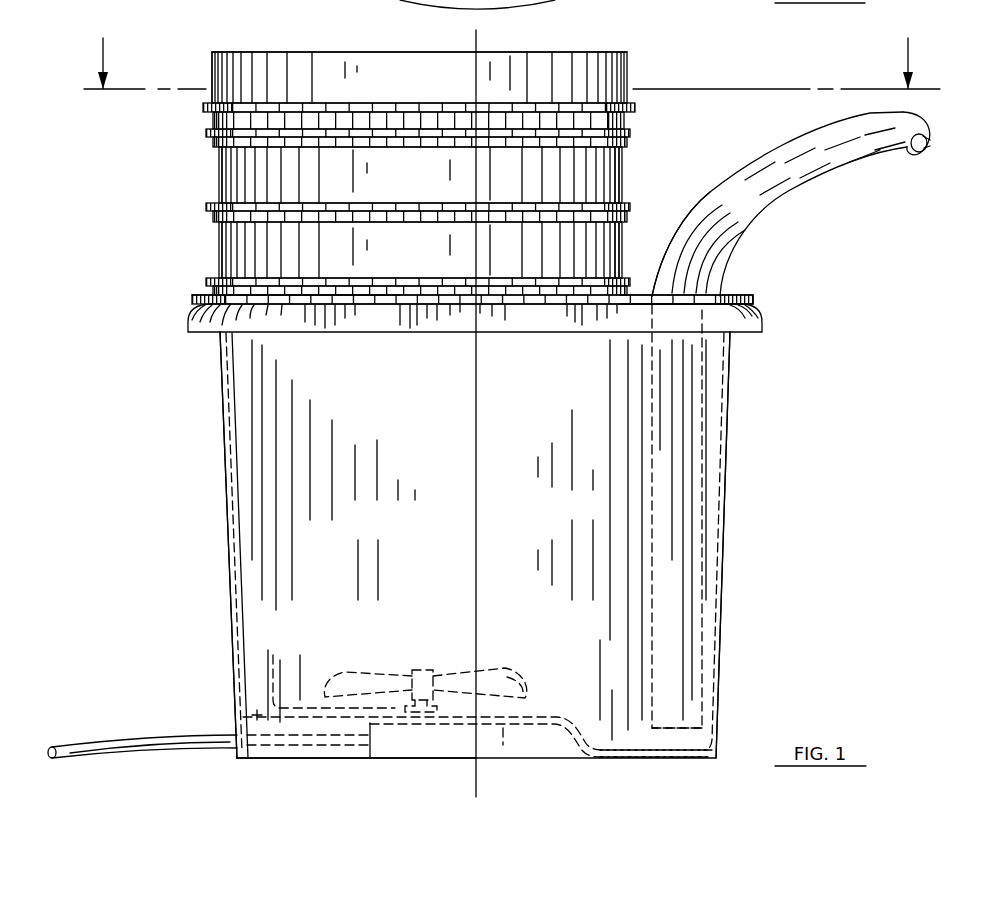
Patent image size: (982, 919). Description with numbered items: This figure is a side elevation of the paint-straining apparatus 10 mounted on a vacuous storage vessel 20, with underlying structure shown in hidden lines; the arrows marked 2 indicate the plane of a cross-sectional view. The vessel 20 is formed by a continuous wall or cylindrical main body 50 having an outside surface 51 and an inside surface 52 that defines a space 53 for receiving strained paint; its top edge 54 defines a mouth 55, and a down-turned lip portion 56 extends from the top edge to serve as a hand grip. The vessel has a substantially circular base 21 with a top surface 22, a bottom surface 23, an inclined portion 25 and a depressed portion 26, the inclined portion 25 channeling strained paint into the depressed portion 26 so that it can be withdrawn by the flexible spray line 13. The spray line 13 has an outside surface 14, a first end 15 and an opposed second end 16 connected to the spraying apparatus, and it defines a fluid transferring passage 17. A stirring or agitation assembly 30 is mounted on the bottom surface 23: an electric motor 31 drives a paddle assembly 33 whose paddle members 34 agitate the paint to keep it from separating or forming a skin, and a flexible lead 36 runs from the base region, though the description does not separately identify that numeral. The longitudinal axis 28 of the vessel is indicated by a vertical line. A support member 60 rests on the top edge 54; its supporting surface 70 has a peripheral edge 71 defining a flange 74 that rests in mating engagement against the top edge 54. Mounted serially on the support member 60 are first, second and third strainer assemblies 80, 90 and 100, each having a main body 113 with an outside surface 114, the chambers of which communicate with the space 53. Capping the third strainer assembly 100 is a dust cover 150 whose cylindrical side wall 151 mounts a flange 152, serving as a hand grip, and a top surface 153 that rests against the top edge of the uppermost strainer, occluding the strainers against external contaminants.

The section line 2- 2 is at (512, 49).
The apparatus 10 is at (777, 238).
The flexible spray line 13 is at (762, 192).
The outside surface 14 is at (686, 202).
The first end 15 is at (700, 716).
The second end 16 is at (868, 150).
The fluid transferring passage 17 is at (677, 468).
The vacuous storage vessel 20 is at (728, 565).
The circular base 21 is at (275, 678).
The top surface 22 is at (528, 722).
The bottom surface 23 is at (503, 745).
The inclined portion 25 is at (344, 722).
The depressed portion 26 is at (640, 752).
The longitudinal axis 28 is at (477, 430).
The stirring or agitation assembly 30 is at (414, 652).
The electric motor 31 is at (440, 738).
The paddle assembly 33 is at (504, 678).
The paddle members 34 is at (333, 678).
The inlet tube 36 is at (108, 745).
The continuous wall 50 is at (210, 473).
The outside surface 51 is at (223, 572).
The inside surface 52 is at (238, 540).
The space 53 is at (375, 440).
The top edge 54 is at (210, 327).
The mouth 55 is at (368, 305).
The down-turned lip portion 56 is at (190, 326).
The support member 60 is at (206, 296).
The supporting surface 70 is at (727, 296).
The peripheral edge 71 is at (755, 300).
The flange 74 is at (192, 298).
The first strainer assembly 80 is at (612, 253).
The second strainer assembly 90 is at (616, 163).
The third strainer assembly 100 is at (624, 124).
The main body 113 is at (322, 120).
The outside surface 114 is at (238, 226).
The dust cover 150 is at (373, 82).
The cylindrical side wall 151 is at (211, 76).
The flange 152 is at (203, 107).
The top surface 153 is at (315, 52).